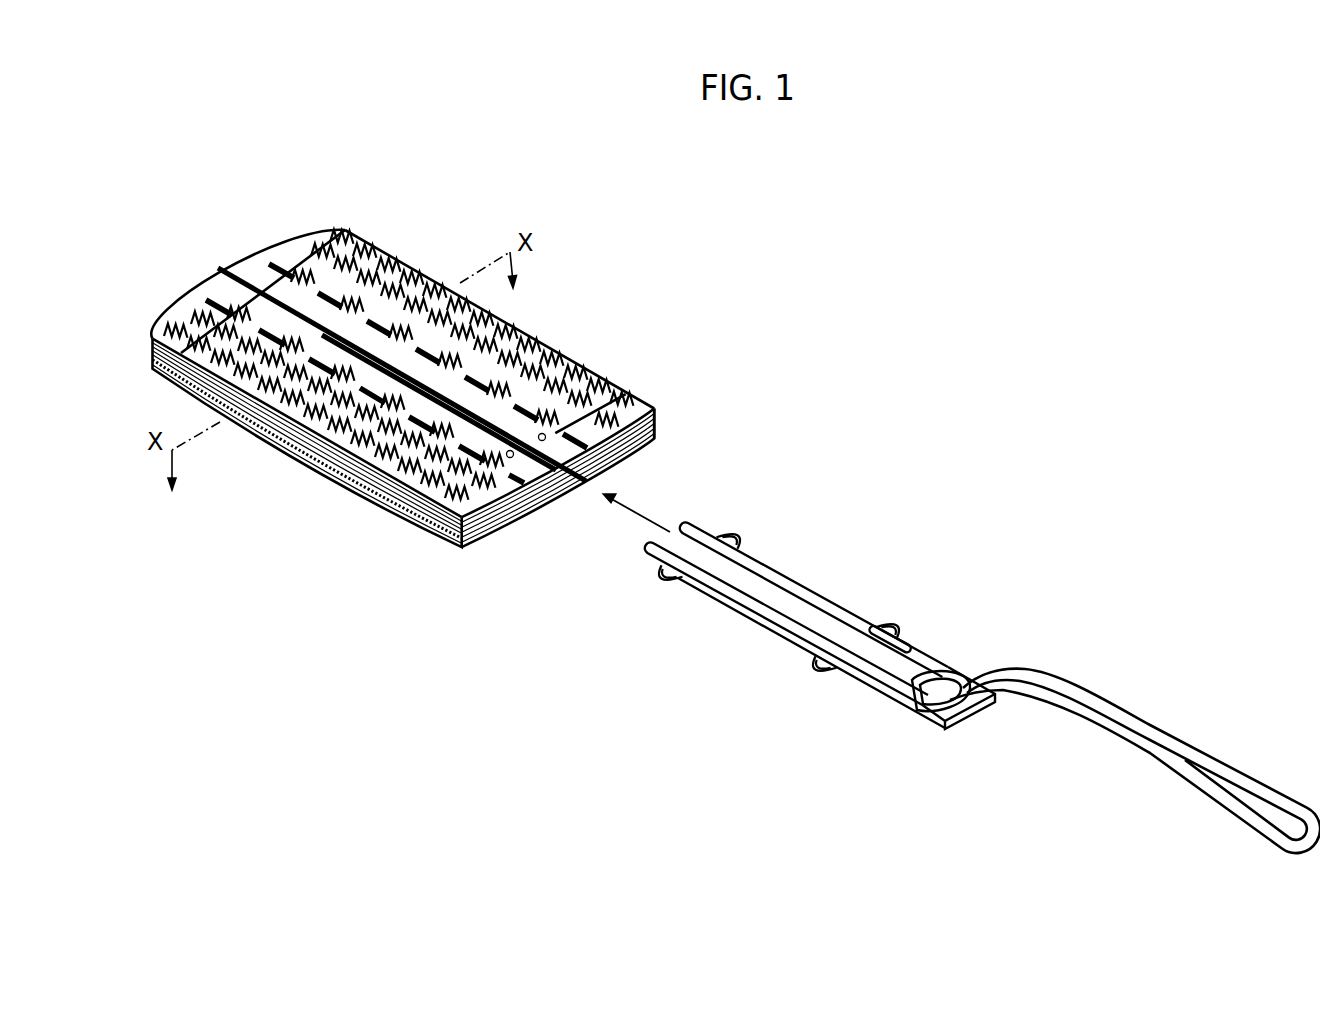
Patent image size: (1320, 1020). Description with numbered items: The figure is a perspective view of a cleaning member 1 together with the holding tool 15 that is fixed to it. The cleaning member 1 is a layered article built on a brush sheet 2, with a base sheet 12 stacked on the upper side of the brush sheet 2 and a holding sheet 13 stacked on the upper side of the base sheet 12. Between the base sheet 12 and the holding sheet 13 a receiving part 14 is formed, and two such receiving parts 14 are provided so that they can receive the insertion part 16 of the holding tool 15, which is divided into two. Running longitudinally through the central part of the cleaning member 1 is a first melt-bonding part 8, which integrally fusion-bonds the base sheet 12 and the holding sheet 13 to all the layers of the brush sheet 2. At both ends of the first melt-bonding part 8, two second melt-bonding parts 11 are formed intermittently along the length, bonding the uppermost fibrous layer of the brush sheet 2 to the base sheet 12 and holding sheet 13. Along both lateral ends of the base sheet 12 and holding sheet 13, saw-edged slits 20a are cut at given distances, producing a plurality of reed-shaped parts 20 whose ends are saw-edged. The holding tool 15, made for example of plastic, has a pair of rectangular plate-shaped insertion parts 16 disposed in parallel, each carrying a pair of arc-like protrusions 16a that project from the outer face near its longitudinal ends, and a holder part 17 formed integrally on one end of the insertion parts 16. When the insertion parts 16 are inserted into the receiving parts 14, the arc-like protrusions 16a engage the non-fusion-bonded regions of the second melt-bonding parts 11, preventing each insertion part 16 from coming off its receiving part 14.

The cleaning member 1 is at (424, 226).
The brush sheet 2 is at (290, 455).
The first melt-bonding part 8 is at (272, 300).
The second melt-bonding parts 11 is at (207, 290).
The base sheet 12 is at (650, 405).
The holding sheet 13 is at (637, 423).
The receiving part 14 is at (514, 458).
The holding tool 15 is at (1135, 701).
The insertion part 16 is at (770, 618).
The arc-like protrusion 16a is at (665, 578).
The holder part 17 is at (1103, 695).
The reed-shaped parts 20 is at (600, 388).
The saw-edged slits 20a is at (567, 360).